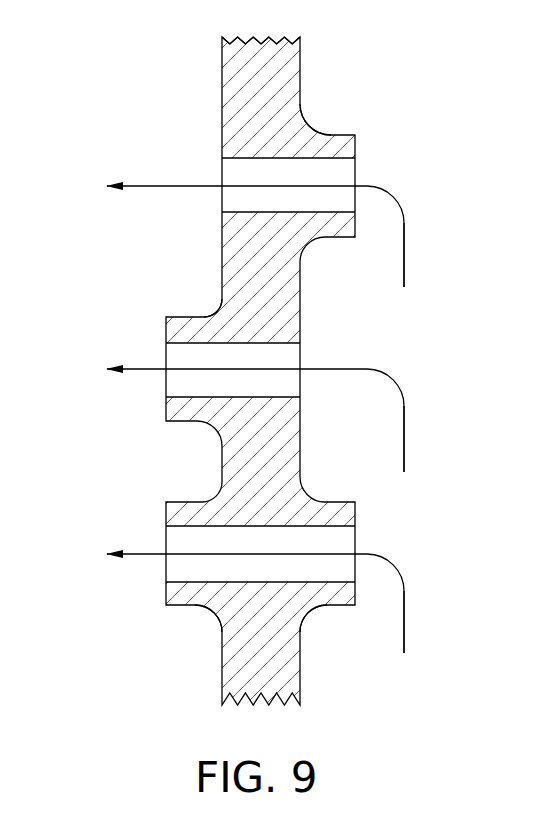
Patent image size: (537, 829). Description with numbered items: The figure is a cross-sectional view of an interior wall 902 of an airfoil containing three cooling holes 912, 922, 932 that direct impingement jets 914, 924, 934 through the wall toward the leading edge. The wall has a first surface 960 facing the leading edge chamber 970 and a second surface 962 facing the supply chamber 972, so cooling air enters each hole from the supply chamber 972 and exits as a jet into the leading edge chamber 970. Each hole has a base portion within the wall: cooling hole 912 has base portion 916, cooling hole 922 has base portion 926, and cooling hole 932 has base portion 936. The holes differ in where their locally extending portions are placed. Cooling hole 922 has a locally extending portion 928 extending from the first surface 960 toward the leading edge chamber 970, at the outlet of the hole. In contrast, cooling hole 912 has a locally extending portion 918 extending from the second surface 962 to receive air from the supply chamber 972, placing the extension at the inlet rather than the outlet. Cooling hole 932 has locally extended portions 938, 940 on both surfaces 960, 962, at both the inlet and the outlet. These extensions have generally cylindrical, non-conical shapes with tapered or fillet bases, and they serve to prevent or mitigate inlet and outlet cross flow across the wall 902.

The interior wall 902 is at (222, 78).
The cooling hole 912 is at (362, 163).
The impingement jet 914 is at (404, 214).
The base portion 916 is at (263, 157).
The locally extending portion 918 is at (340, 135).
The cooling hole 922 is at (312, 352).
The impingement jet 924 is at (405, 398).
The base portion 926 is at (265, 343).
The locally extending portion 928 is at (207, 316).
The cooling hole 932 is at (362, 533).
The impingement jet 934 is at (405, 583).
The base portion 936 is at (266, 526).
The locally extended portion 938 is at (203, 607).
The locally extended portion 940 is at (332, 605).
The first surface 960 is at (222, 52).
The second surface 962 is at (300, 52).
The leading edge chamber 970 is at (80, 342).
The supply chamber 972 is at (513, 341).